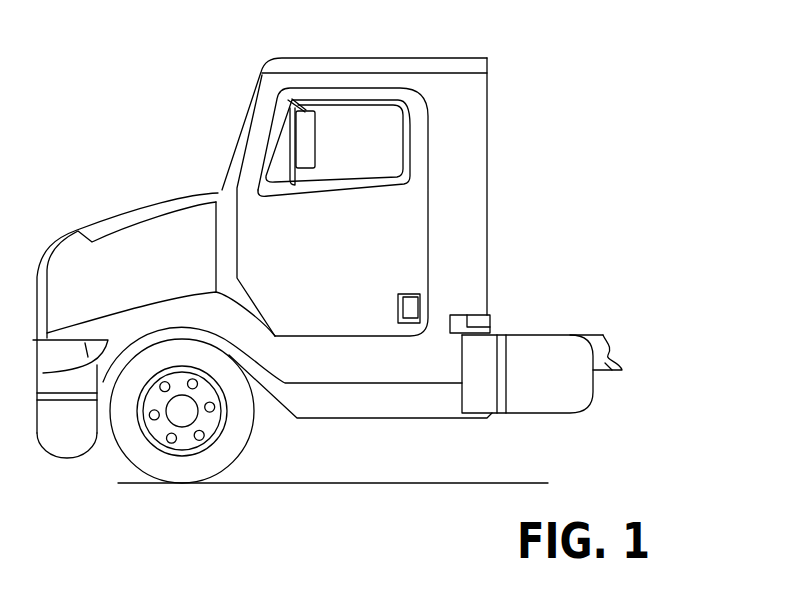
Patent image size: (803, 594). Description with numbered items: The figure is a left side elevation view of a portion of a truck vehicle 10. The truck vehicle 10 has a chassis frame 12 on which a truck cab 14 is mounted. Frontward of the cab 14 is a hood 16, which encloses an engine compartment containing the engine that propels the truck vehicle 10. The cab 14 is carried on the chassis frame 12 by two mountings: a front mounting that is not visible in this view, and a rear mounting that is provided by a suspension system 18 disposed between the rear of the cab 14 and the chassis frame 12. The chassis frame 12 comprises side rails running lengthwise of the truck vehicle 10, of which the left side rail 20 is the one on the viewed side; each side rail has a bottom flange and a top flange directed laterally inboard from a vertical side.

The truck vehicle 10 is at (546, 172).
The chassis frame 12 is at (601, 334).
The truck cab 14 is at (488, 58).
The hood 16 is at (125, 211).
The suspension system 18 is at (491, 323).
The left side rail 20 is at (622, 370).